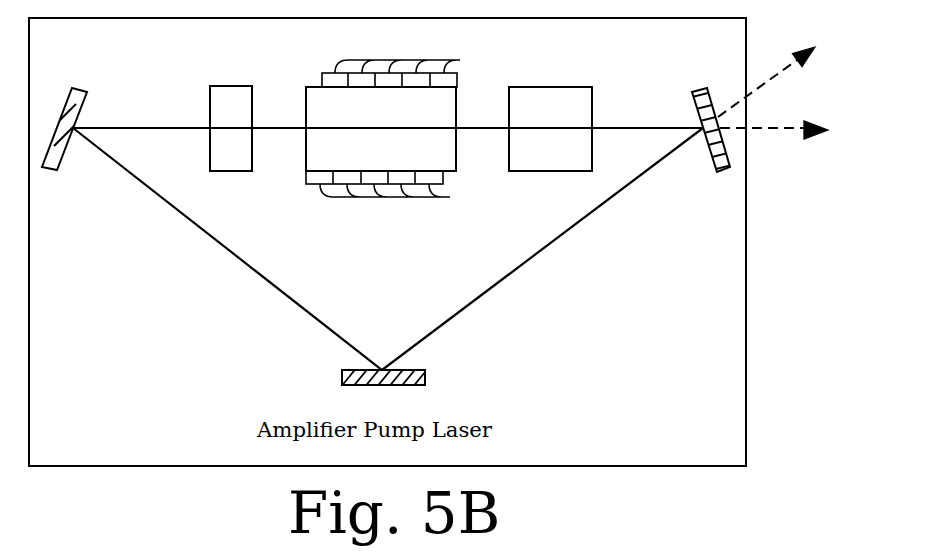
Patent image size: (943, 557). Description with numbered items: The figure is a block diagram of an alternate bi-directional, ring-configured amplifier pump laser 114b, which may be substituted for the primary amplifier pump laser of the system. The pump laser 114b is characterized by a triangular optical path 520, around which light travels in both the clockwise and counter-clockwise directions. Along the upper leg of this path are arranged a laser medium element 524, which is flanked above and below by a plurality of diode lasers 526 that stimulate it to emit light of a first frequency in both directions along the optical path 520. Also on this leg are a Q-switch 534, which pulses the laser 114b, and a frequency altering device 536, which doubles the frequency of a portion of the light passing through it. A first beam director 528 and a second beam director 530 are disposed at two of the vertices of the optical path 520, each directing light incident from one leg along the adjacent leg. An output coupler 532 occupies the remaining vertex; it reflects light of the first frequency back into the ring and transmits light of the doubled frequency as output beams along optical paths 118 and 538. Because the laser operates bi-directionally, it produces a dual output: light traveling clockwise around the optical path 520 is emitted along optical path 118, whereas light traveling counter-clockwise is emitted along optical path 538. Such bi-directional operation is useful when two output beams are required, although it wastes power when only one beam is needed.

The amplifier pump laser 114b is at (560, 466).
The optical path 520 is at (182, 129).
The laser medium element 524 is at (306, 107).
The diode lasers 526 is at (460, 60).
The first beam director 528 is at (85, 86).
The second beam director 530 is at (427, 372).
The output coupler 532 is at (713, 162).
The Q-switch 534 is at (222, 86).
The frequency altering device 536 is at (572, 87).
The optical path 538 is at (777, 73).
The optical path 118 is at (763, 132).